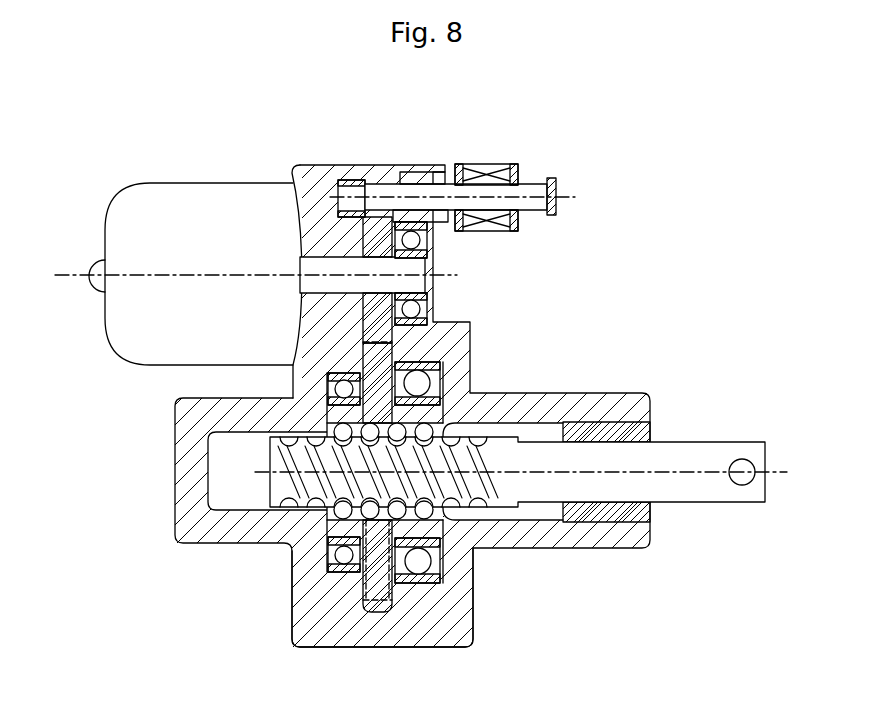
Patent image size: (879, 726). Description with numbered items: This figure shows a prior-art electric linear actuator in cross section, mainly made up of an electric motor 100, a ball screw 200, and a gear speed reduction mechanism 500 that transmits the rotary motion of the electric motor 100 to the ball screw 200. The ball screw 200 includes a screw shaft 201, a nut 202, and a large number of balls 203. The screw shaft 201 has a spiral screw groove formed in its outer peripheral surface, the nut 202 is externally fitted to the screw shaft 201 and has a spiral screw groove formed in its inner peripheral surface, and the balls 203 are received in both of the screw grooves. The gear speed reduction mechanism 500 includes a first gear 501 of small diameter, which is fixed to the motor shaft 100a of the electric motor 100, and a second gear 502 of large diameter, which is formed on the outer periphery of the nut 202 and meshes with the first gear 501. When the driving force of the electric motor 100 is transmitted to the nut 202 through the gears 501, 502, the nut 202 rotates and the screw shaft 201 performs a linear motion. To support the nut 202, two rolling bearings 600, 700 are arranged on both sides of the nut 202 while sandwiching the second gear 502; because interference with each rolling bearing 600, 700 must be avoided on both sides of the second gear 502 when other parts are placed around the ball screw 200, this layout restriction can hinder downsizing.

The electric motor 100 is at (208, 208).
The motor shaft 100a is at (319, 265).
The ball screw 200 is at (515, 512).
The screw shaft 201 is at (697, 452).
The nut 202 is at (327, 417).
The balls 203 is at (292, 551).
The gear speed reduction mechanism 500 is at (555, 288).
The first gear 501 is at (383, 313).
The second gear 502 is at (375, 358).
The rolling bearing 600 is at (343, 566).
The rolling bearing 700 is at (425, 578).